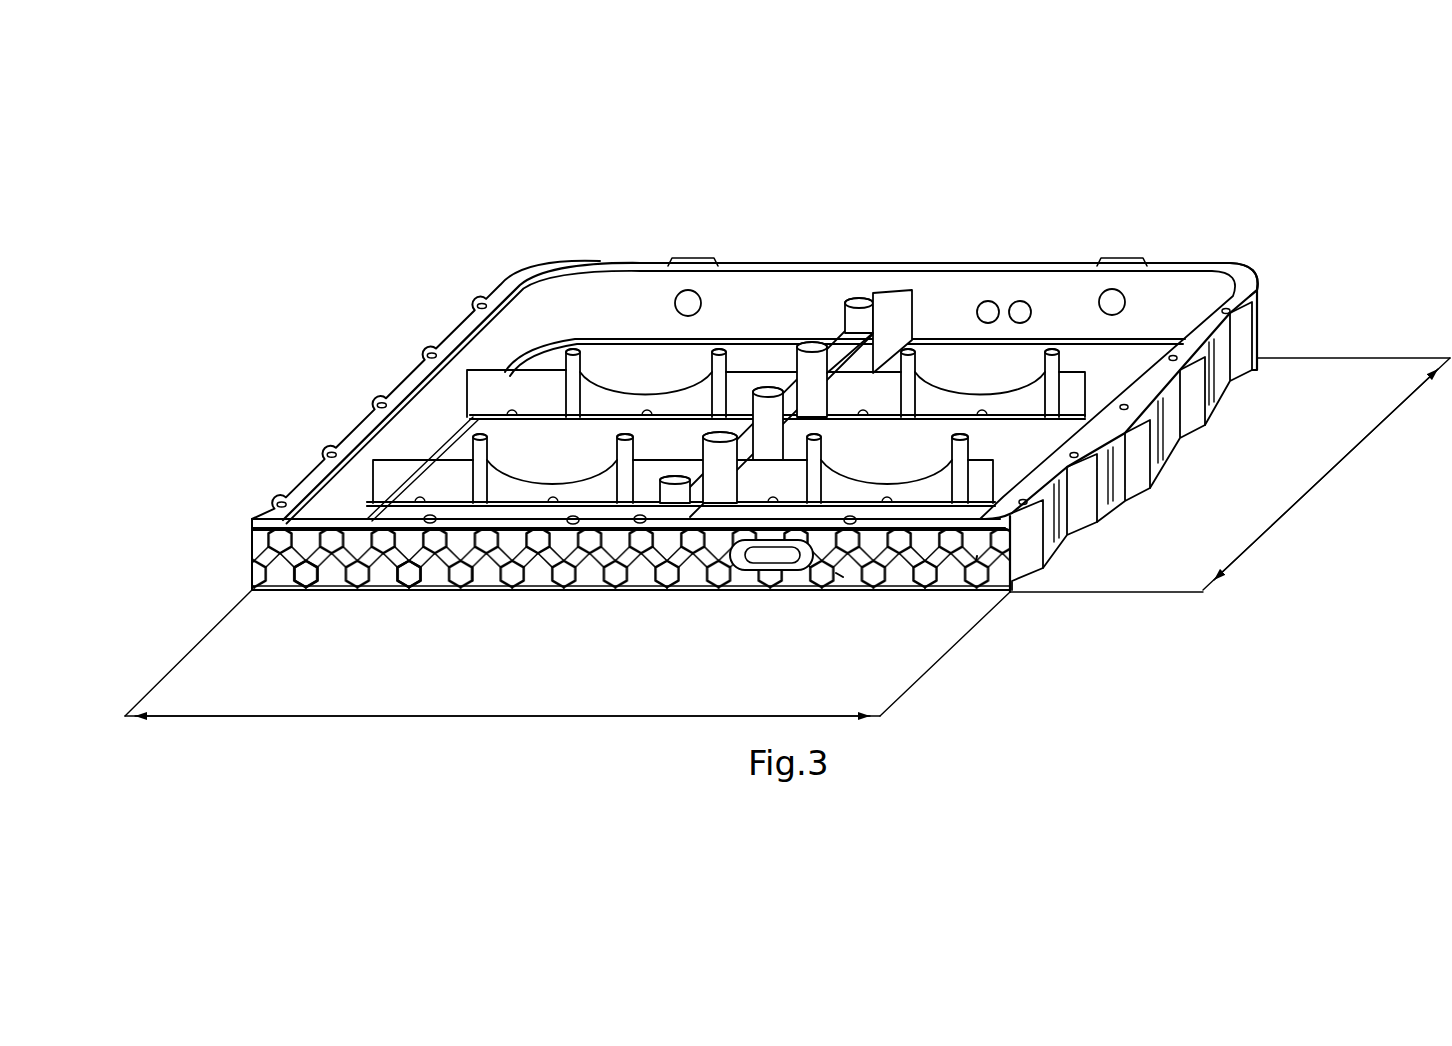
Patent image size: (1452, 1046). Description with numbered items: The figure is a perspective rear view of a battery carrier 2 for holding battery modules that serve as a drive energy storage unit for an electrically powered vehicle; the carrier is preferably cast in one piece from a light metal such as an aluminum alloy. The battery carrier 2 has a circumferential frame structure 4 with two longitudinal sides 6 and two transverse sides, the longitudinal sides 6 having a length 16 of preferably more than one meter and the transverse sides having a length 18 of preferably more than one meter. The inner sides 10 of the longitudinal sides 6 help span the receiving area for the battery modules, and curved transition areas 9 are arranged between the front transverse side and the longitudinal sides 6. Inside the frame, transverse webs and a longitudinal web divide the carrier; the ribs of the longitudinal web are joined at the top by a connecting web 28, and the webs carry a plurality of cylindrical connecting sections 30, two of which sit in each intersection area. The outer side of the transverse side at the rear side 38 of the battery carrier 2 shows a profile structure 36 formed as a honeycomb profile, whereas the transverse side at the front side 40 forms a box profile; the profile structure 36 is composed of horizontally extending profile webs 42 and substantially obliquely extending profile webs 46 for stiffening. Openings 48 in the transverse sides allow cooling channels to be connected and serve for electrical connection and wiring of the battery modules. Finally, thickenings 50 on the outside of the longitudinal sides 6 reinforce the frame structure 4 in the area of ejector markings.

The battery carrier 2 is at (428, 200).
The circumferential frame structure 4 is at (1123, 530).
The longitudinal sides 6 is at (1230, 428).
The curved transition areas 9 is at (1245, 280).
The inner sides of the longitudinal sides 10 is at (437, 413).
The length of the longitudinal sides 16 is at (1326, 474).
The length of the transverse sides 18 is at (502, 699).
The connecting web 28 is at (913, 303).
The cylindrical connecting sections 30 is at (855, 313).
The profile structure 36 is at (568, 603).
The rear side 38 is at (638, 607).
The front side 40 is at (1077, 225).
The horizontally extending profile webs 42 is at (308, 583).
The obliquely extending profile webs 46 is at (473, 582).
The openings 48 is at (688, 305).
The thickenings 50 is at (1240, 363).